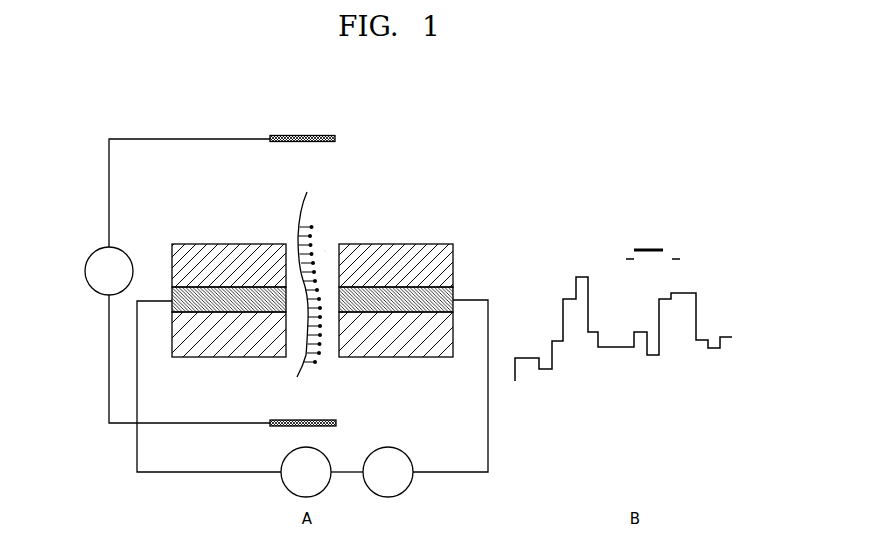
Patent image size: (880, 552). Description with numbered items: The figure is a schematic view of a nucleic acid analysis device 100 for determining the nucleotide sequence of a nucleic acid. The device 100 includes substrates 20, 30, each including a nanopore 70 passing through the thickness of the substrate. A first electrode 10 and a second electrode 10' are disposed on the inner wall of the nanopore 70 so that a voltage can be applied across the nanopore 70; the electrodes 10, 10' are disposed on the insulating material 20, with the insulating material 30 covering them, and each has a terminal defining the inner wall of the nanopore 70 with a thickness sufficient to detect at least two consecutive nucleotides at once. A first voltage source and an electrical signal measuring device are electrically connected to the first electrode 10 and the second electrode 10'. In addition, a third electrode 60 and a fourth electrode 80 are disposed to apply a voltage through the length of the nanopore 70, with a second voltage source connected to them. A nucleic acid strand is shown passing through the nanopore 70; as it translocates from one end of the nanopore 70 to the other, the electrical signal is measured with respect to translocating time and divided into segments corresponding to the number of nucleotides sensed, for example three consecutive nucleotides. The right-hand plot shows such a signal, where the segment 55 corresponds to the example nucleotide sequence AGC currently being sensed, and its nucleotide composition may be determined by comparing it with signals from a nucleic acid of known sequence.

The nucleic acid analysis device 100 is at (96, 131).
The first electrode 10 is at (229, 253).
The second electrode 10' is at (415, 249).
The substrate 20 is at (230, 322).
The substrate 30 is at (185, 243).
The segment 55 is at (654, 358).
The third electrode 60 is at (335, 134).
The nanopore 70 is at (324, 247).
The fourth electrode 80 is at (335, 418).